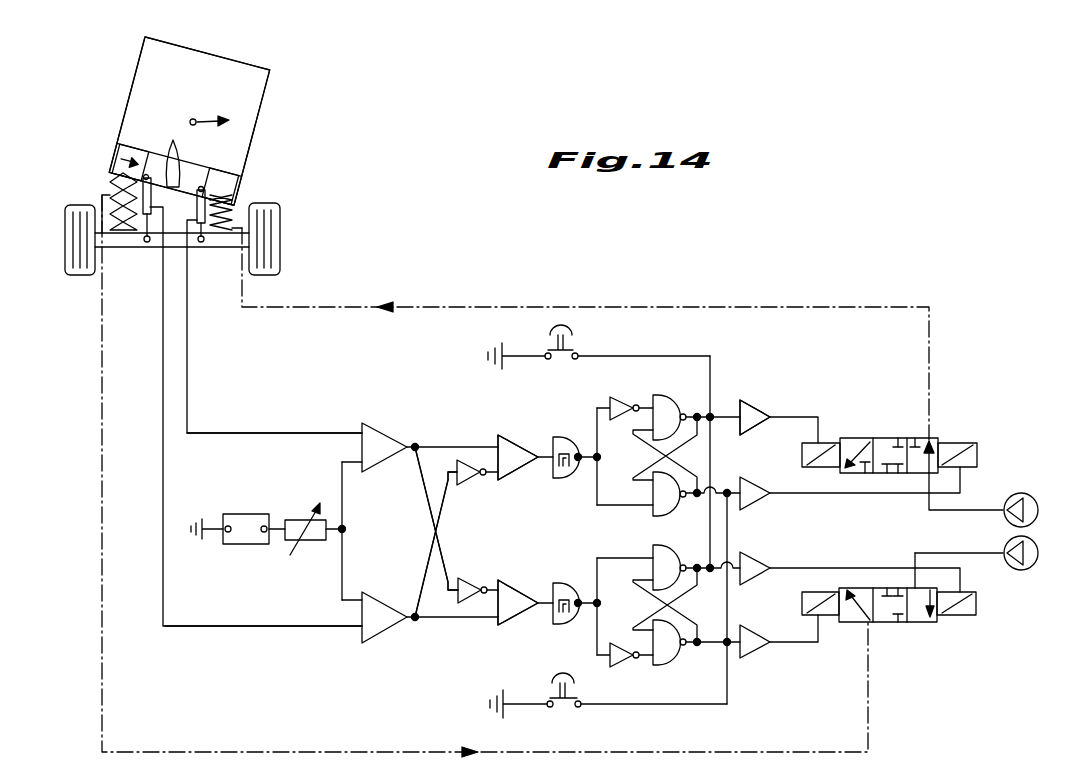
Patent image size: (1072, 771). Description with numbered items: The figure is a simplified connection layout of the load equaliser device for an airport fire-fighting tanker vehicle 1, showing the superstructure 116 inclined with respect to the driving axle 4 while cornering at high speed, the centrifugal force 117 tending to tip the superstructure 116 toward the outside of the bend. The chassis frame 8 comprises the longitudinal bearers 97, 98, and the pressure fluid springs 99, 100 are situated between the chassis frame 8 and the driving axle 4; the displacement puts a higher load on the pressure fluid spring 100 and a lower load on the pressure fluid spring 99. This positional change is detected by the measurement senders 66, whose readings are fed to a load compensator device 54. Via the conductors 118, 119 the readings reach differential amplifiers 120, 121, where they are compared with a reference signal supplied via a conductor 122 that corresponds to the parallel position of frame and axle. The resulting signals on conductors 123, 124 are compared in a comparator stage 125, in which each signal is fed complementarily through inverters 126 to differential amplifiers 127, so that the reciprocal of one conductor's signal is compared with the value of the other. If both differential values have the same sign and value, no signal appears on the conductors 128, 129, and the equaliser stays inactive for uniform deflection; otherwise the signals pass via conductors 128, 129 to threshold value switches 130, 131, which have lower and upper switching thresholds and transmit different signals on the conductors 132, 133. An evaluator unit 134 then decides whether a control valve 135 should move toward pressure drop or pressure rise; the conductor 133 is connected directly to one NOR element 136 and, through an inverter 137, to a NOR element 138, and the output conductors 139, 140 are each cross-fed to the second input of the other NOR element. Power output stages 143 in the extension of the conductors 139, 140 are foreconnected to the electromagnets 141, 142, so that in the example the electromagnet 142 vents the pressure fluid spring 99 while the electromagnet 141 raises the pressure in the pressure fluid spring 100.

The airport fire-fighting tanker vehicle 1 is at (266, 92).
The driving axle 4 is at (143, 251).
The chassis frame 8 is at (117, 157).
The load compensator device 54 is at (469, 424).
The measurement sender 66 is at (192, 209).
The longitudinal bearer 97 is at (118, 147).
The longitudinal bearer 98 is at (237, 183).
The pressure fluid spring 99 is at (112, 183).
The pressure fluid spring 100 is at (222, 233).
The superstructure 116 is at (132, 82).
The centrifugal force 117 is at (194, 117).
The conductor 118 is at (272, 433).
The conductor 119 is at (272, 626).
The differential amplifier 120 is at (378, 447).
The differential amplifier 121 is at (377, 618).
The conductor 122 is at (330, 540).
The conductor 123 is at (410, 445).
The conductor 124 is at (410, 620).
The comparator stage 125 is at (473, 626).
The inverter 126 is at (465, 484).
The differential amplifier 127 is at (512, 463).
The conductor 128 is at (542, 452).
The conductor 129 is at (542, 613).
The threshold value switch 130 is at (563, 437).
The threshold value switch 131 is at (568, 583).
The conductor 132 is at (587, 467).
The conductor 133 is at (587, 610).
The evaluator unit 134 is at (770, 658).
The control valve 135 is at (897, 417).
The NOR element 136 is at (672, 400).
The inverter 137 is at (620, 403).
The NOR element 138 is at (670, 500).
The conductor 139 is at (727, 417).
The conductor 140 is at (727, 500).
The electromagnet 141 is at (968, 443).
The electromagnet 142 is at (802, 455).
The power output stage 143 is at (760, 410).